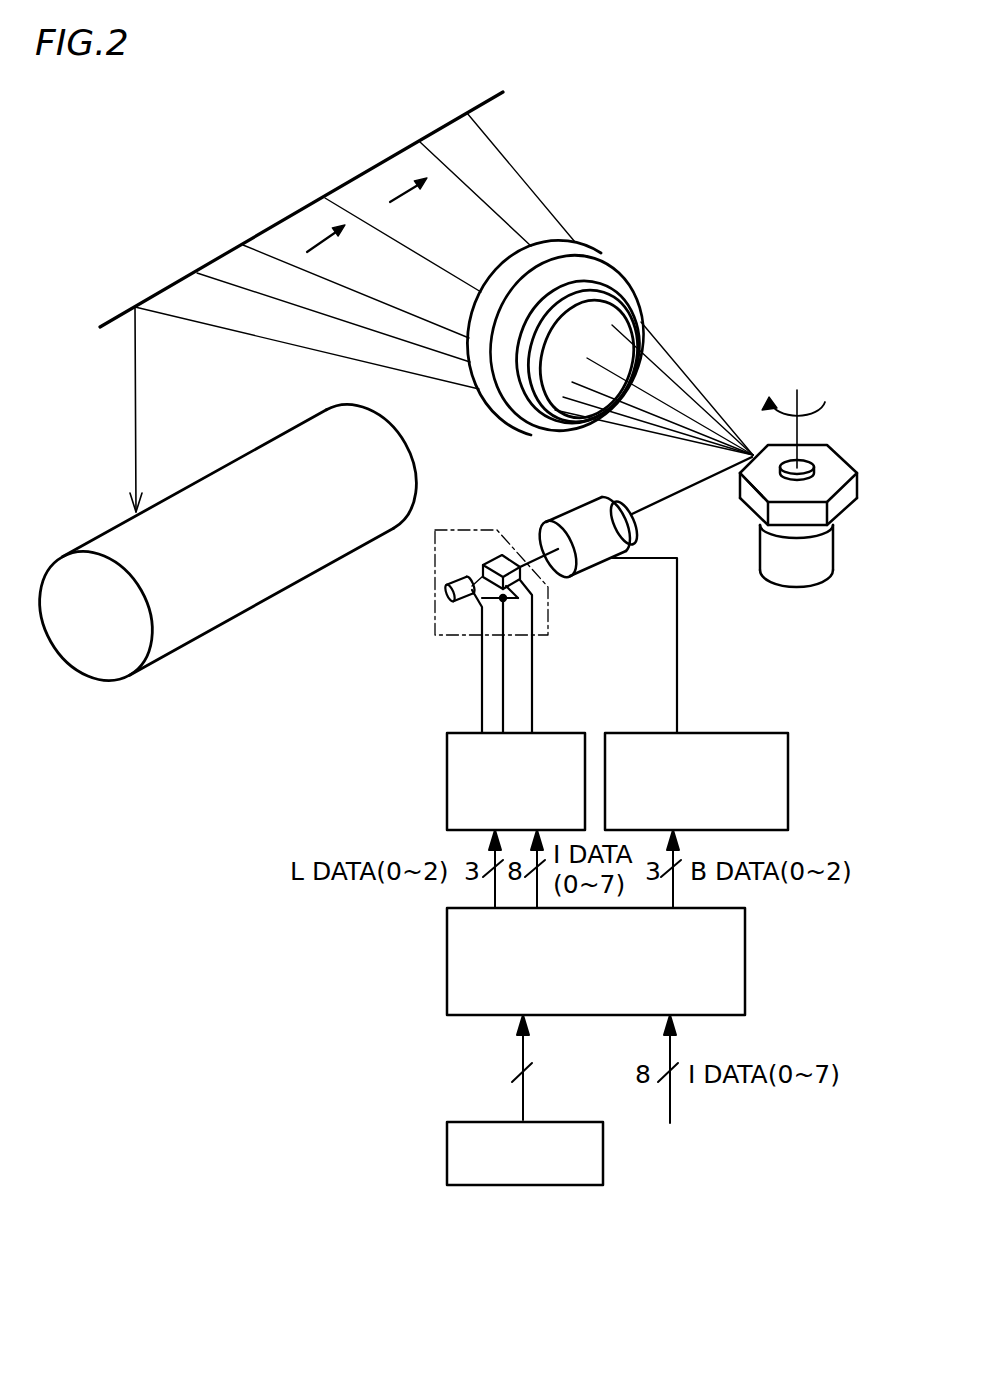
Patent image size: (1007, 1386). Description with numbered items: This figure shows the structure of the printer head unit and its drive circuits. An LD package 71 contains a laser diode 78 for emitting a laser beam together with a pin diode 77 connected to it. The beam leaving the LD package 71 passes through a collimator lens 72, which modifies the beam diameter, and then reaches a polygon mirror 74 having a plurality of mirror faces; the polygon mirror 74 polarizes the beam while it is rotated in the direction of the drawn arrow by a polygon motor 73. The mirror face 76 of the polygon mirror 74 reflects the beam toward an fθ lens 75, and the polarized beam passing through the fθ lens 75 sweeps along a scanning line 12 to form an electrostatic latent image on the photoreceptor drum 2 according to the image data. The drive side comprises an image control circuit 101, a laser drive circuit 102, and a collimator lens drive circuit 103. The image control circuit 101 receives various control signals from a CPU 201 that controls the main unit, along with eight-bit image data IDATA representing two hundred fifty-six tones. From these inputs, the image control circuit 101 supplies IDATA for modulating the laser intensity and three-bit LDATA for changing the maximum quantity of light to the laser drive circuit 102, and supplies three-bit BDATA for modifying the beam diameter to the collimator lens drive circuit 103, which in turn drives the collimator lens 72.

The photoreceptor drum 2 is at (173, 633).
The scanning line 12 is at (489, 101).
The LD package 71 is at (450, 530).
The collimator lens 72 is at (585, 520).
The polygon motor 73 is at (793, 578).
The polygon mirror 74 is at (833, 463).
The fθ lens 75 is at (597, 252).
The reflecting surface 76 is at (753, 503).
The pin diode 77 is at (446, 592).
The laser diode 78 is at (498, 555).
The image control circuit 101 is at (447, 972).
The laser drive circuit 102 is at (447, 780).
The collimator lens drive circuit 103 is at (790, 778).
The CPU 201 is at (447, 1158).